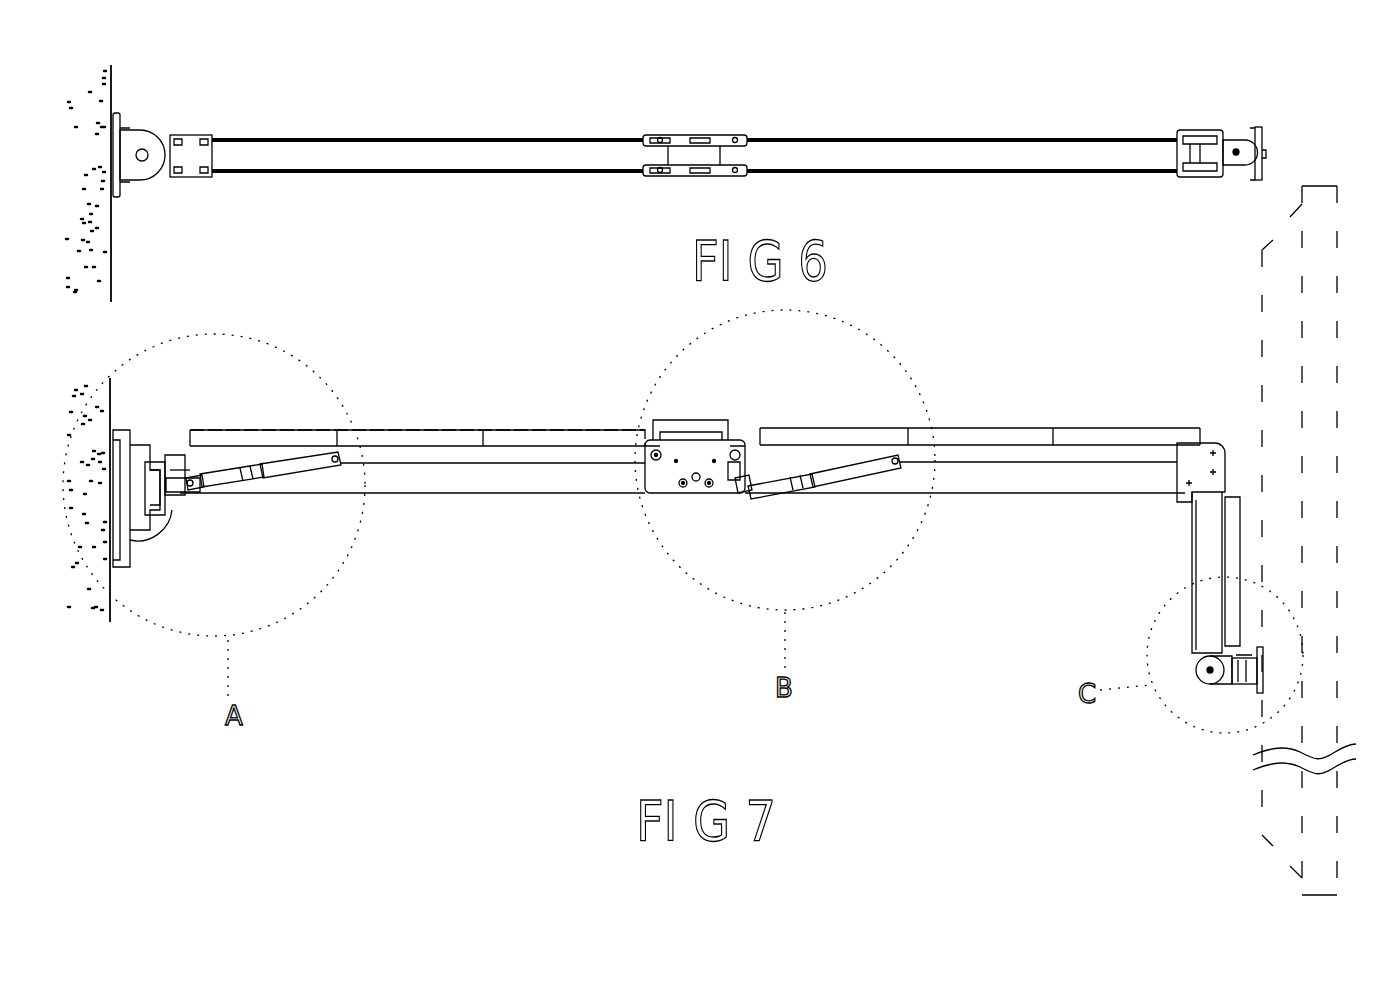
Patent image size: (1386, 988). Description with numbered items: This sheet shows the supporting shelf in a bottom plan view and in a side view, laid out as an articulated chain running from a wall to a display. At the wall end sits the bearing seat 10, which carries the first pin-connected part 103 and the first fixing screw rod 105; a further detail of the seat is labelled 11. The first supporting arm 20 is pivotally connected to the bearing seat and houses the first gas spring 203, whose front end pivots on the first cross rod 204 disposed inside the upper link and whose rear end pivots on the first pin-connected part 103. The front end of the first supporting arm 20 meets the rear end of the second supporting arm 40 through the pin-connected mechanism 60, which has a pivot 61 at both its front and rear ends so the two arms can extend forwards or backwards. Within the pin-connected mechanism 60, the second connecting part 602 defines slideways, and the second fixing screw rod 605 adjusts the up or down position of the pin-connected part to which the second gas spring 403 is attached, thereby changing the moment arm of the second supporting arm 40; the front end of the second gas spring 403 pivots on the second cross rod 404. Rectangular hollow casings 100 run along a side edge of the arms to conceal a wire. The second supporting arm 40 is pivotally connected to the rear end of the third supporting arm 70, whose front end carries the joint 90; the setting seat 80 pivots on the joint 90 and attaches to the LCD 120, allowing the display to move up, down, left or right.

In FIG. 6, the bearing seat 10 is at (145, 128).
In FIG. 7, the bearing seat 10 is at (130, 530).
In FIG. 7, the bracket pivot 11 is at (160, 450).
In FIG. 6, the first supporting arm 20 is at (400, 137).
In FIG. 7, the first supporting arm 20 is at (455, 495).
In FIG. 6, the second supporting arm 40 is at (892, 137).
In FIG. 7, the second supporting arm 40 is at (960, 495).
In FIG. 6, the pin-connected mechanism 60 is at (650, 176).
In FIG. 7, the pin-connected mechanism 60 is at (665, 495).
In FIG. 6, the pivot 61 is at (735, 135).
In FIG. 7, the pivot 61 is at (652, 440).
In FIG. 6, the third supporting arm 70 is at (1188, 130).
In FIG. 7, the third supporting arm 70 is at (1198, 540).
In FIG. 6, the setting seat 80 is at (1262, 125).
In FIG. 7, the setting seat 80 is at (1262, 695).
In FIG. 6, the joint 90 is at (1214, 138).
In FIG. 7, the joint 90 is at (1208, 684).
In FIG. 7, the casing 100 is at (545, 428).
In FIG. 7, the first pin-connected part 103 is at (190, 440).
In FIG. 7, the first fixing screw rod 105 is at (230, 497).
In FIG. 7, the LCD 120 is at (1278, 373).
In FIG. 7, the first gas spring 203 is at (305, 480).
In FIG. 7, the first cross rod 204 is at (382, 445).
In FIG. 7, the second gas spring 403 is at (850, 480).
In FIG. 7, the second cross rod 404 is at (900, 458).
In FIG. 7, the second connecting part 602 is at (723, 490).
In FIG. 7, the second fixing screw rod 605 is at (738, 440).